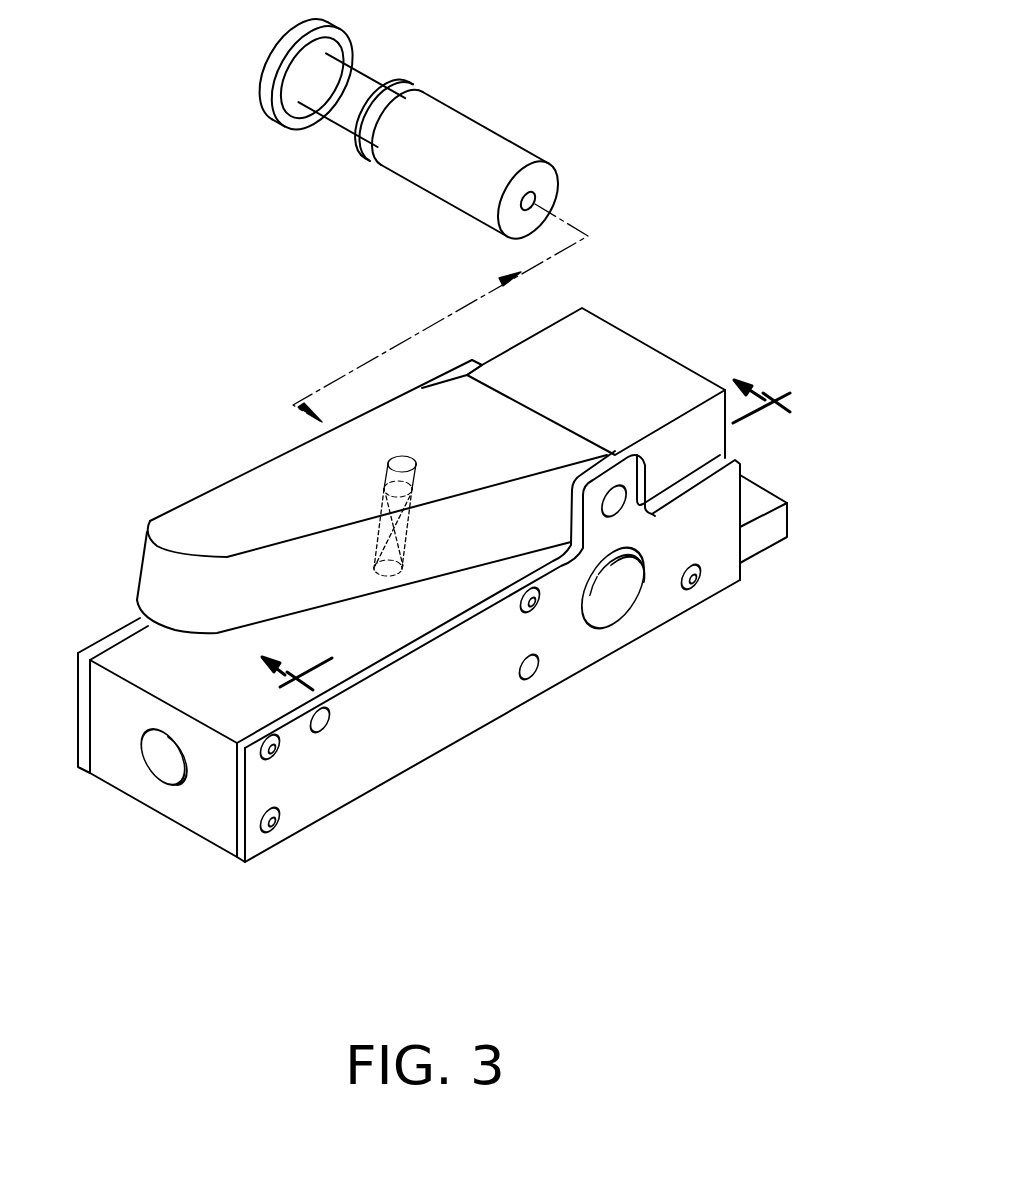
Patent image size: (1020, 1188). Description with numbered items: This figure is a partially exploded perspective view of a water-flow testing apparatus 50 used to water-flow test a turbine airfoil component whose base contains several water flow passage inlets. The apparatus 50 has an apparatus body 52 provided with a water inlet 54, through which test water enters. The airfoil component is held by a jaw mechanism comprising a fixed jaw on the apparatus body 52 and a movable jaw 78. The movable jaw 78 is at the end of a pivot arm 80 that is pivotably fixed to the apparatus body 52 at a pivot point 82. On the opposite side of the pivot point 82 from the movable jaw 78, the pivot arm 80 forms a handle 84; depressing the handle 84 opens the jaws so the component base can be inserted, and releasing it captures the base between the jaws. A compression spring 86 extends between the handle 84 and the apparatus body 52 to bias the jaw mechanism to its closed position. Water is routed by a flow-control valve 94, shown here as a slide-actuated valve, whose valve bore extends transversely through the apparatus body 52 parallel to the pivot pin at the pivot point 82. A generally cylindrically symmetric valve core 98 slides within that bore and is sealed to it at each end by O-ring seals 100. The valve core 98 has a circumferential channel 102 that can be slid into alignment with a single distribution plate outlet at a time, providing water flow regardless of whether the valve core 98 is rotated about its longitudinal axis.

The water-flow testing apparatus 50 is at (211, 372).
The apparatus body 52 is at (415, 738).
The water inlet 54 is at (173, 762).
The movable jaw 78 is at (712, 436).
The pivot arm 80 is at (623, 360).
The pivot point 82 is at (618, 505).
The handle 84 is at (215, 507).
The compression spring 86 is at (377, 548).
The flow-control valve 94 is at (452, 312).
The valve core 98 is at (488, 125).
The O-ring seals 100 is at (613, 628).
The channel 102 is at (380, 135).